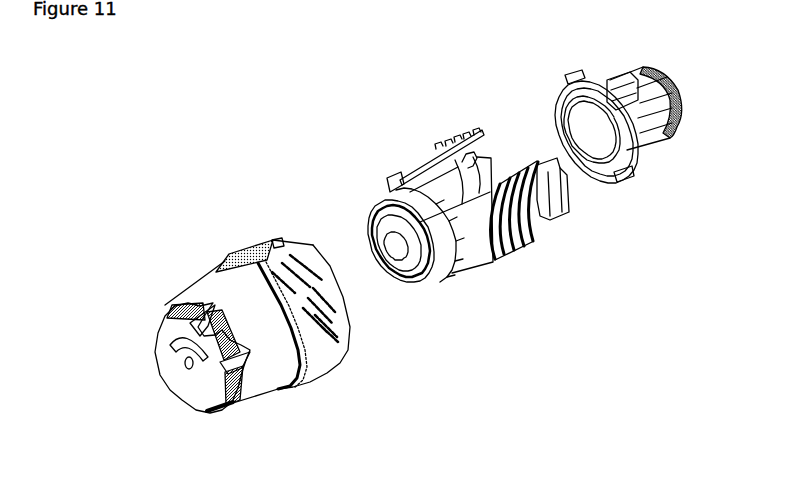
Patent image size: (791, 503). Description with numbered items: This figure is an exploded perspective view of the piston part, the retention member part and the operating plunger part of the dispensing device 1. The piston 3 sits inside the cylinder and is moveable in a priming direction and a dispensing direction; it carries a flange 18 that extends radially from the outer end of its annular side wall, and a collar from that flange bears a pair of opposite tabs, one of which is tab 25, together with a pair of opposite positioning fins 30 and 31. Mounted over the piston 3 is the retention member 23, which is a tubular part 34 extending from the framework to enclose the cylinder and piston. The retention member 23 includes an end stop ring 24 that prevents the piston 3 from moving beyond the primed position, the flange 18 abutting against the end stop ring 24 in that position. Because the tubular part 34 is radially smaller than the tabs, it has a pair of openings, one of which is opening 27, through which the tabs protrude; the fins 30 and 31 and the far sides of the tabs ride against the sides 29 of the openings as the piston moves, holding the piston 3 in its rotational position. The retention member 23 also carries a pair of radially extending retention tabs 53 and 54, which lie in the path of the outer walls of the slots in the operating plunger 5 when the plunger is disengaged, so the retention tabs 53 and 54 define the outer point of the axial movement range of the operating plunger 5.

The dispensing device 1 is at (143, 157).
The piston 3 is at (570, 81).
The operating plunger 5 is at (193, 291).
The flange 18 is at (560, 97).
The retention member 23 is at (408, 170).
The end stop ring 24 is at (375, 183).
The tab 25 is at (603, 80).
The opening 27 is at (485, 150).
The side of opening 29 is at (437, 150).
The positioning fin 30 is at (560, 84).
The positioning fin 31 is at (628, 178).
The tubular part 34 is at (485, 270).
The retention tab 53 is at (368, 186).
The retention tab 54 is at (425, 296).